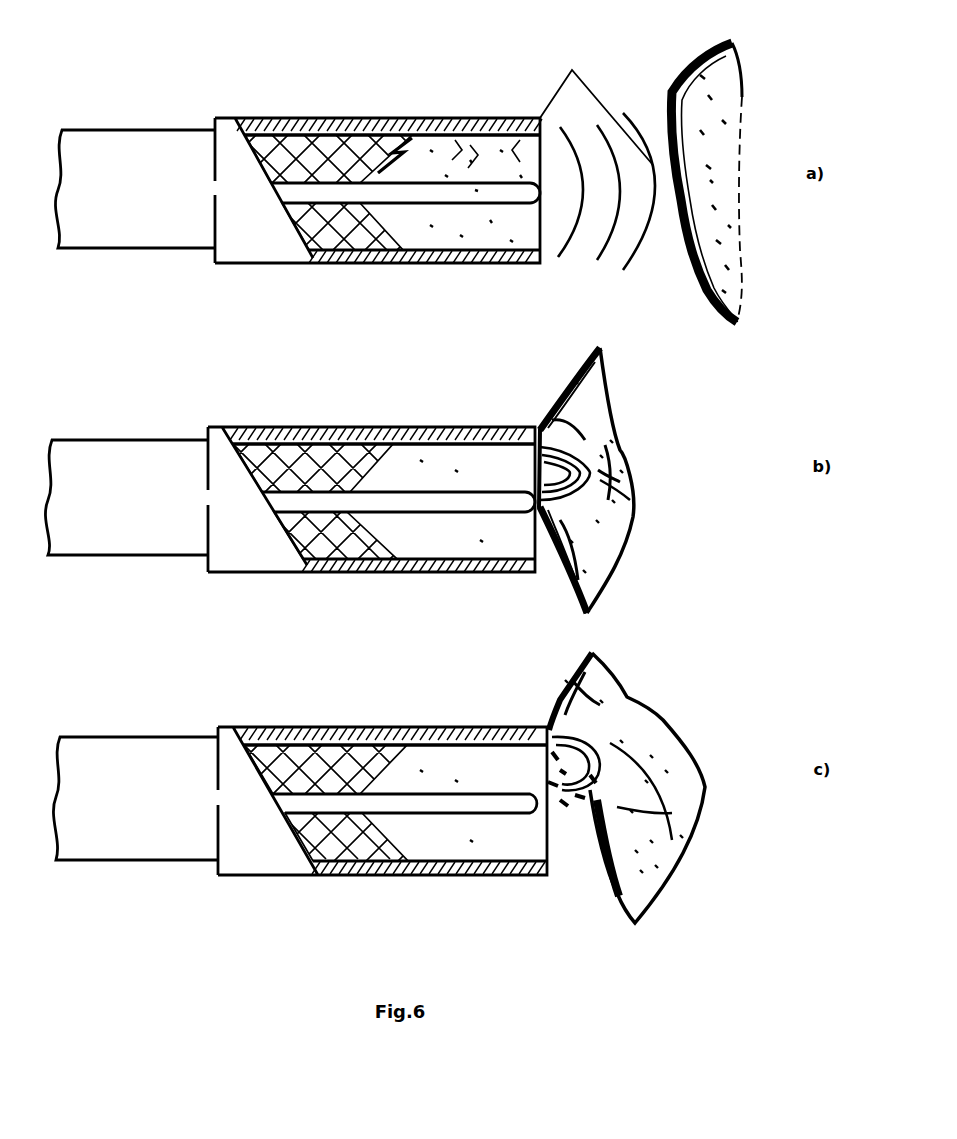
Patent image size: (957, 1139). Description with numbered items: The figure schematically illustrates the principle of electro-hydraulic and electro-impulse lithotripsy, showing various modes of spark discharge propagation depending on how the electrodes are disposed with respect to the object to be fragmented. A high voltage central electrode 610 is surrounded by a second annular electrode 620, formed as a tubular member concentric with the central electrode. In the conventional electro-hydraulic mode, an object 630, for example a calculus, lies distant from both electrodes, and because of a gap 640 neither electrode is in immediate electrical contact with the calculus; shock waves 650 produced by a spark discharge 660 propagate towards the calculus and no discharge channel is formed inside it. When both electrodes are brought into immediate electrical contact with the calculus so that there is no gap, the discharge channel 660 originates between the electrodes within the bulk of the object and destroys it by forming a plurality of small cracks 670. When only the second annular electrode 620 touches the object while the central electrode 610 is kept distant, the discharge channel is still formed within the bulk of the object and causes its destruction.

The high voltage central electrode 610 is at (437, 194).
The second annular electrode 620 is at (381, 262).
The object 630 is at (713, 110).
The gap 640 is at (550, 268).
The shock waves 650 is at (596, 102).
The spark discharge 660 is at (390, 118).
The small cracks 670 is at (620, 497).